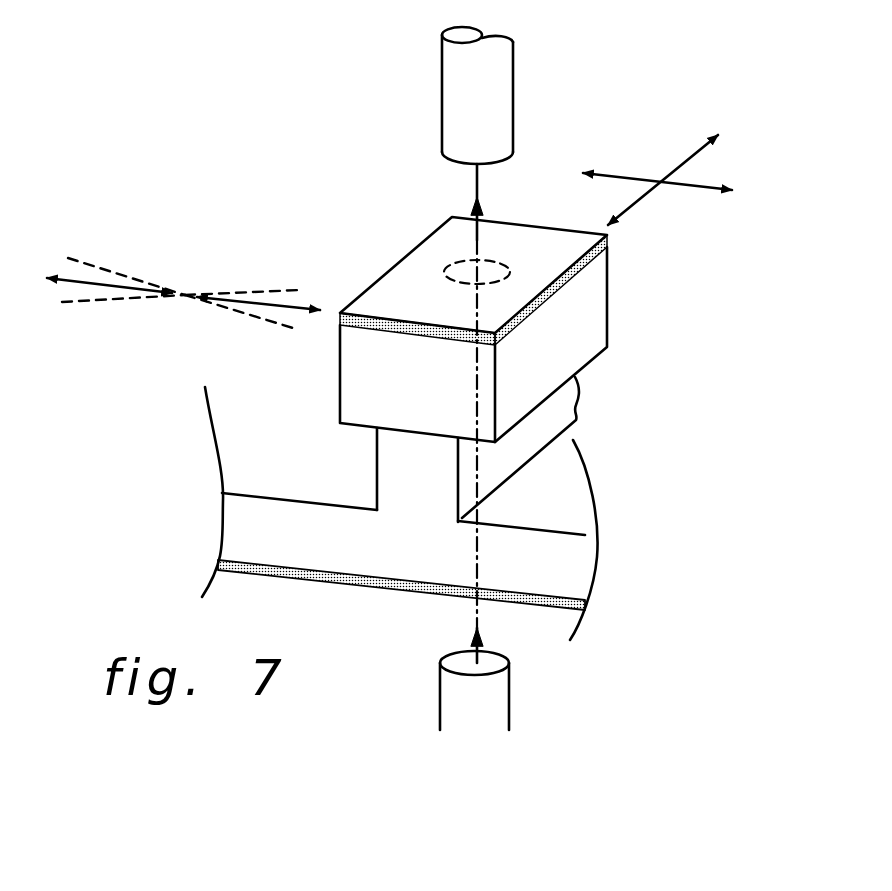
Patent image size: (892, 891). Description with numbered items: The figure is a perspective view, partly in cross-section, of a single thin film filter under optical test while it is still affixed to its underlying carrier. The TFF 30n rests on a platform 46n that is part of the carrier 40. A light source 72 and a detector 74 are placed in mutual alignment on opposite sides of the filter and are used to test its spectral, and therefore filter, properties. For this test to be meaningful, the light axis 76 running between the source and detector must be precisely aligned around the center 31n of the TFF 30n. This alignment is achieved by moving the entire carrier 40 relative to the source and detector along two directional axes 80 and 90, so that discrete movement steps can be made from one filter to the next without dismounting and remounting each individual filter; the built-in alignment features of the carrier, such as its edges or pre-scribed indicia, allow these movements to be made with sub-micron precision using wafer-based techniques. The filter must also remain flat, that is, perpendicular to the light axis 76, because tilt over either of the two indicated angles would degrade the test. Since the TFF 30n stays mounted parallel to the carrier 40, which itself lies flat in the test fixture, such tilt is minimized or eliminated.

The detector 74 is at (442, 70).
The light axis 76 is at (477, 185).
The TFF 30n is at (608, 293).
The center of the TFF 31n is at (503, 265).
The directional axis 80 is at (627, 175).
The directional axis 90 is at (688, 152).
The platform 46n is at (445, 489).
The carrier 40 is at (567, 568).
The light source 72 is at (509, 708).